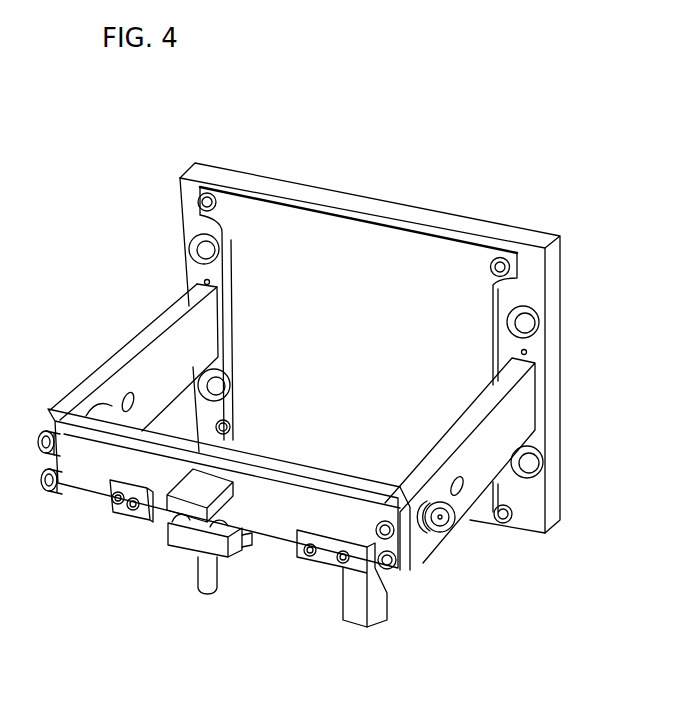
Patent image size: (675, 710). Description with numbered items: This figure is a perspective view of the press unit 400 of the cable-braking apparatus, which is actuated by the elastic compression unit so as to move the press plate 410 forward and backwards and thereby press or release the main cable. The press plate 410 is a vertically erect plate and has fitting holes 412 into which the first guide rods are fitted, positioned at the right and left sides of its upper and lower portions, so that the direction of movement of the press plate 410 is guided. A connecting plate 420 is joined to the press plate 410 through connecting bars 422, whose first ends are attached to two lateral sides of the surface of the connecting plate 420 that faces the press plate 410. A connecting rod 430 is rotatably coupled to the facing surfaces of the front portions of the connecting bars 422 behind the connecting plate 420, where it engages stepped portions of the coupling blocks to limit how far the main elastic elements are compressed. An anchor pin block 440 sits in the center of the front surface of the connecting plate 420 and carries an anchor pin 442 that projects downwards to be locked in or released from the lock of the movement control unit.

The press unit 400 is at (499, 190).
The press plate 410 is at (360, 232).
The fitting holes 412 is at (540, 327).
The connecting plate 420 is at (280, 527).
The connecting bars 422 is at (157, 360).
The connecting rod 430 is at (125, 423).
The anchor pin block 440 is at (177, 535).
The anchor pin 442 is at (207, 581).